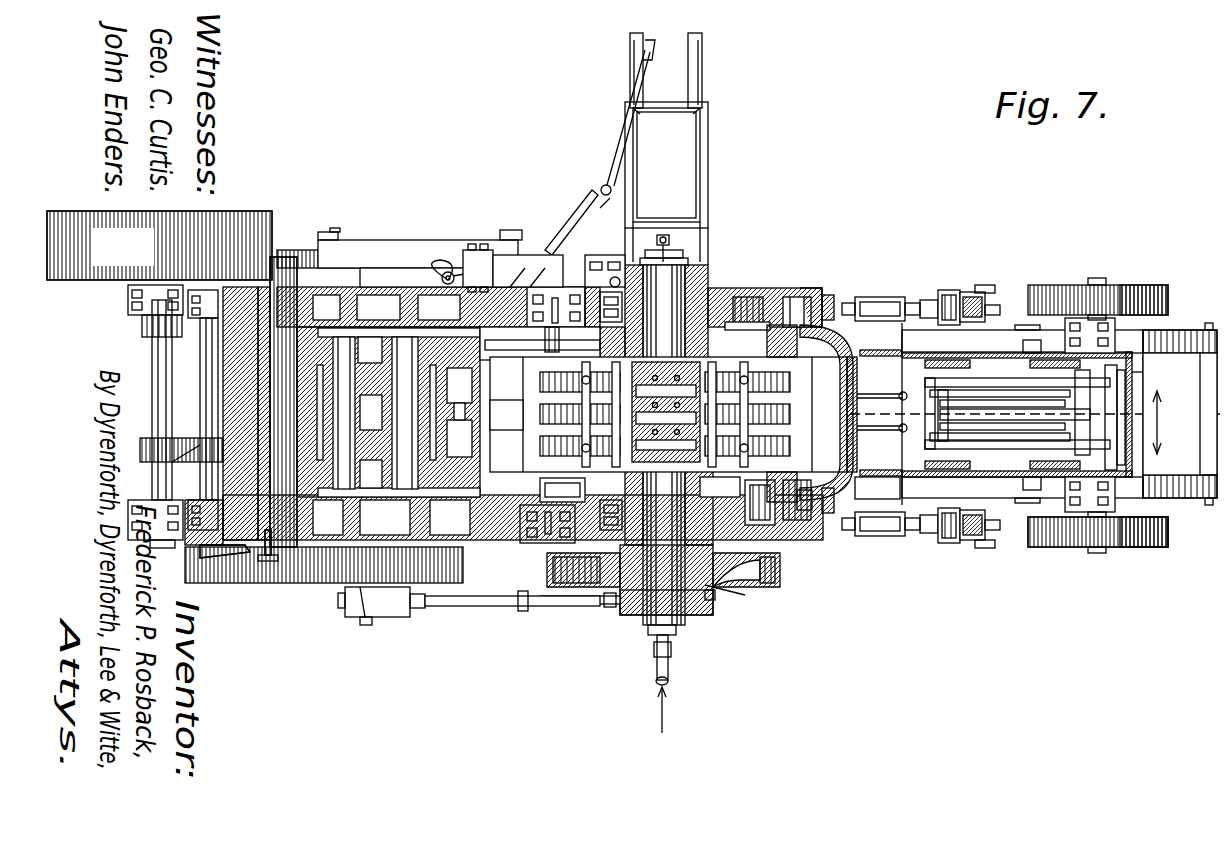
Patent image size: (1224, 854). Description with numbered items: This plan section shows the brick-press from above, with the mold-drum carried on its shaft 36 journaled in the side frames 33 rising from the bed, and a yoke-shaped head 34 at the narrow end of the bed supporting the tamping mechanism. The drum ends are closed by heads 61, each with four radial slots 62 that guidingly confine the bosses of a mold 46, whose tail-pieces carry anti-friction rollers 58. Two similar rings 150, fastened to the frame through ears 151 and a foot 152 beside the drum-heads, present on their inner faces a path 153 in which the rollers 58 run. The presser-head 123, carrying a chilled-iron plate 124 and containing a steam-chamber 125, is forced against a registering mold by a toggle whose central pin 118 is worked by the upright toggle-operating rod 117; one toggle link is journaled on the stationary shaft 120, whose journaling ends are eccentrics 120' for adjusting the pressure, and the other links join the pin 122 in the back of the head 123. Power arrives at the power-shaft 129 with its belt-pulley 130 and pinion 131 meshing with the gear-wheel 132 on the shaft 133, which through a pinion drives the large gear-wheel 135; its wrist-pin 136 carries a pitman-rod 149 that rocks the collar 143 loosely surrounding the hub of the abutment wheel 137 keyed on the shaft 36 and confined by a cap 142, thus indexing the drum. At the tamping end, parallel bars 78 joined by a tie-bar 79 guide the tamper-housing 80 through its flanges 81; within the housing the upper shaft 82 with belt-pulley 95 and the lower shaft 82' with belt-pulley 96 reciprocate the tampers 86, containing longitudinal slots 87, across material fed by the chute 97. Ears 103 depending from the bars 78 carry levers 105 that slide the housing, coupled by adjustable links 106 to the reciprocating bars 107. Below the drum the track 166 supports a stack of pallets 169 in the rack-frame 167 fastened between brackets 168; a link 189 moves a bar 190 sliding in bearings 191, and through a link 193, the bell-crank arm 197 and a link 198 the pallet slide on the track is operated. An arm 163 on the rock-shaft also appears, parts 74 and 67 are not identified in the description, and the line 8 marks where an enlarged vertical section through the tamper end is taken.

The track 166 is at (643, 62).
The rack-frame 167 is at (698, 110).
The pallets 169 is at (666, 183).
The bolt 74 is at (663, 235).
The link 198 is at (604, 184).
The bell-crank arm 197 is at (608, 190).
The shaft 36 is at (688, 265).
The pin 67 is at (668, 678).
The brackets 168 is at (625, 246).
The foot 152 is at (570, 292).
The ears 151 is at (742, 320).
The rings 150 is at (794, 300).
The frame 33 is at (818, 296).
The drum-heads 61 is at (588, 330).
The anti-friction roller 58 is at (545, 490).
The stationary shaft 120 is at (184, 413).
The eccentrics 120' is at (318, 412).
The belt-pulley 130 is at (159, 245).
The power-shaft 129 is at (158, 423).
The shaft 133 is at (207, 393).
The pinion 131 is at (140, 443).
The gear-wheel 132 is at (190, 455).
The toggle-operating rod 117 is at (318, 413).
The central pin 118 is at (357, 413).
The pin 122 is at (414, 413).
The steam-chamber 125 is at (461, 412).
The presser-head 123 is at (540, 343).
The link 189 is at (358, 240).
The arm 163 is at (392, 268).
The link 193 is at (450, 272).
The bearings 191 is at (478, 250).
The bar 190 is at (542, 258).
The mold 46 is at (673, 414).
The plate 124 is at (506, 415).
The radial slots 62 is at (727, 413).
The box or chute 97 is at (872, 362).
The tamping-head 86 is at (882, 386).
The longitudinal slots 87 is at (862, 440).
The yoke-shaped head 34 is at (1035, 414).
The flanges 81 is at (1052, 342).
The shaft 82 is at (1098, 280).
The belt-pulley 95 is at (1138, 290).
The lower shaft 82' is at (1098, 549).
The belt-pulley 96 is at (1138, 548).
The horizontal bars 78 is at (1172, 338).
The tamper-housing 80 is at (1133, 370).
The section line 8 is at (1163, 422).
The tie-bar 79 is at (1204, 448).
The parallel bars 107 is at (850, 312).
The links 106 is at (946, 293).
The levers 105 is at (975, 300).
The ears 103 is at (1010, 306).
The path 153 is at (803, 512).
The abutment wheel 137 is at (775, 585).
The collar 143 is at (718, 595).
The cap 142 is at (692, 618).
The pitman-rod 149 is at (600, 604).
The large gear-wheel 135 is at (318, 575).
The wrist-pin 136 is at (372, 617).